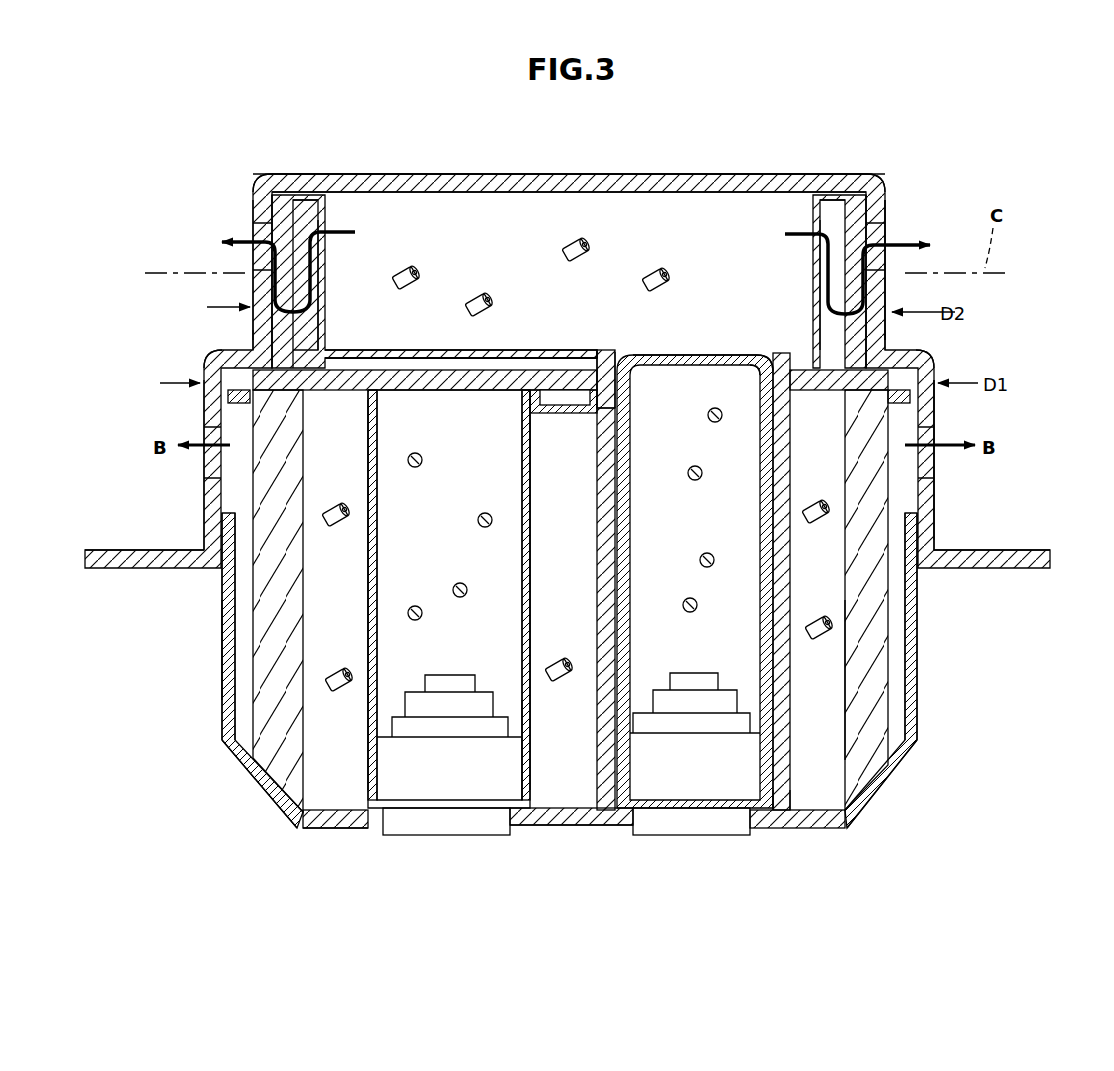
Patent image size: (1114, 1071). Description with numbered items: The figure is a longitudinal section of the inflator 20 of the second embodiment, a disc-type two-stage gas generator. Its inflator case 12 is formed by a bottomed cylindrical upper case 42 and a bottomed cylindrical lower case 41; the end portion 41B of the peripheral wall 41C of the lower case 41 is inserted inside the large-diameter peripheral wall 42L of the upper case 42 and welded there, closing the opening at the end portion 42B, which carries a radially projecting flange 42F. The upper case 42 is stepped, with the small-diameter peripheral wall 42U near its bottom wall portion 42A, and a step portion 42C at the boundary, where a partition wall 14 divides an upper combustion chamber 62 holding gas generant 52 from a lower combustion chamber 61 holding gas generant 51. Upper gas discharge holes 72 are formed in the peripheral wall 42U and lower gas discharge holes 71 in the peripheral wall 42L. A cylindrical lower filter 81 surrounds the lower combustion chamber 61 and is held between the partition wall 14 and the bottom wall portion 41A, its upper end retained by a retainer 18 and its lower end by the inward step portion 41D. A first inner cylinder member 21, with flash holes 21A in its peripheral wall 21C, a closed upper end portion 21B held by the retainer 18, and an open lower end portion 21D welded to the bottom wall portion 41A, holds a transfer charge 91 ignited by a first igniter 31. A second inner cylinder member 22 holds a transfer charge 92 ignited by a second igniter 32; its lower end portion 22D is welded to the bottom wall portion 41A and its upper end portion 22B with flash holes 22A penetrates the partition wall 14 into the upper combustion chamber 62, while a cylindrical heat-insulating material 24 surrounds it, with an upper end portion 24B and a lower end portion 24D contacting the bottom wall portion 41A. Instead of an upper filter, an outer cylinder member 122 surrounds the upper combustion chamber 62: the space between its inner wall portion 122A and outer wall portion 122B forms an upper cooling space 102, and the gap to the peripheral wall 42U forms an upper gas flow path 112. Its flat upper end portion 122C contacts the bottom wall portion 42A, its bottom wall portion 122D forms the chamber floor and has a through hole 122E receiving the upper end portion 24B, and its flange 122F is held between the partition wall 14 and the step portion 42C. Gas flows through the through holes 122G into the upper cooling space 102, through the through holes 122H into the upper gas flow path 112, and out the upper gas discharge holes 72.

The inflator case 12 is at (190, 655).
The partition wall 14 is at (385, 368).
The retainer 18 is at (558, 415).
The inflator 20 is at (155, 150).
The first inner cylinder member 21 is at (365, 645).
The flash holes 21A is at (368, 455).
The upper end portion 21B is at (450, 390).
The peripheral wall 21C is at (530, 705).
The lower end portion 21D is at (532, 812).
The second inner cylinder member 22 is at (633, 354).
The flash holes 22A is at (700, 355).
The upper end portion 22B is at (762, 356).
The lower end portion 22D is at (772, 812).
The heat-insulating material 24 is at (595, 588).
The upper end portion 24B is at (606, 348).
The lower end portion 24D is at (782, 812).
The first igniter 31 is at (462, 675).
The second igniter 32 is at (704, 673).
The lower case 41 is at (585, 832).
The bottom wall portion 41A is at (530, 827).
The end portion 41B is at (225, 514).
The peripheral wall 41C is at (918, 657).
The step portion 41D is at (252, 795).
The upper case 42 is at (690, 172).
The bottom wall portion 42A is at (497, 174).
The end portion 42B is at (205, 560).
The step portion 42C is at (222, 352).
The flange 42F is at (98, 550).
The peripheral wall 42L is at (935, 497).
The peripheral wall 42U is at (886, 285).
The gas generant 51 is at (333, 692).
The gas generant 52 is at (484, 297).
The lower combustion chamber 61 is at (336, 808).
The upper combustion chamber 62 is at (598, 203).
The lower gas discharge holes 71 is at (212, 457).
The upper gas discharge holes 72 is at (253, 223).
The lower filter 81 is at (835, 722).
The transfer charge 91 is at (455, 583).
The transfer charge 92 is at (703, 553).
The upper cooling space 102 is at (313, 210).
The upper gas flow path 112 is at (280, 203).
The outer cylinder member 122 is at (332, 268).
The inner wall portion 122A is at (326, 288).
The outer wall portion 122B is at (253, 200).
The upper end portion 122C is at (298, 197).
The bottom wall portion 122D is at (427, 350).
The through hole 122E is at (600, 350).
The flange 122F is at (230, 400).
The through holes 122G is at (352, 226).
The through holes 122H is at (280, 317).